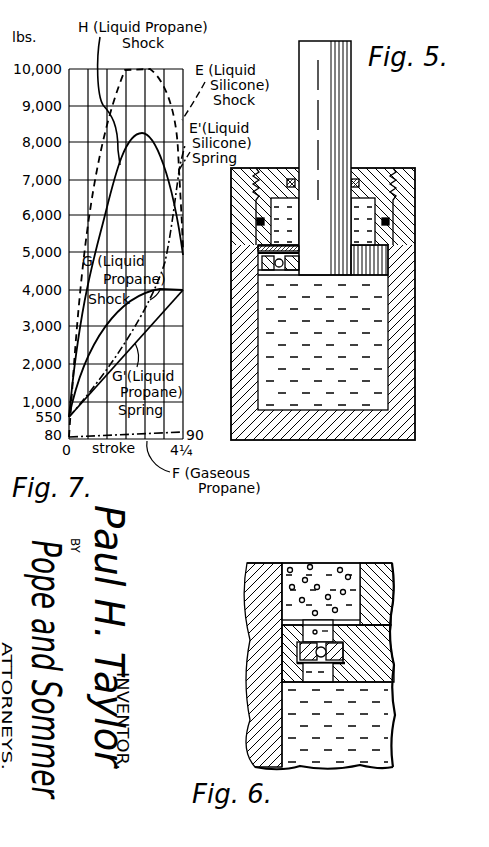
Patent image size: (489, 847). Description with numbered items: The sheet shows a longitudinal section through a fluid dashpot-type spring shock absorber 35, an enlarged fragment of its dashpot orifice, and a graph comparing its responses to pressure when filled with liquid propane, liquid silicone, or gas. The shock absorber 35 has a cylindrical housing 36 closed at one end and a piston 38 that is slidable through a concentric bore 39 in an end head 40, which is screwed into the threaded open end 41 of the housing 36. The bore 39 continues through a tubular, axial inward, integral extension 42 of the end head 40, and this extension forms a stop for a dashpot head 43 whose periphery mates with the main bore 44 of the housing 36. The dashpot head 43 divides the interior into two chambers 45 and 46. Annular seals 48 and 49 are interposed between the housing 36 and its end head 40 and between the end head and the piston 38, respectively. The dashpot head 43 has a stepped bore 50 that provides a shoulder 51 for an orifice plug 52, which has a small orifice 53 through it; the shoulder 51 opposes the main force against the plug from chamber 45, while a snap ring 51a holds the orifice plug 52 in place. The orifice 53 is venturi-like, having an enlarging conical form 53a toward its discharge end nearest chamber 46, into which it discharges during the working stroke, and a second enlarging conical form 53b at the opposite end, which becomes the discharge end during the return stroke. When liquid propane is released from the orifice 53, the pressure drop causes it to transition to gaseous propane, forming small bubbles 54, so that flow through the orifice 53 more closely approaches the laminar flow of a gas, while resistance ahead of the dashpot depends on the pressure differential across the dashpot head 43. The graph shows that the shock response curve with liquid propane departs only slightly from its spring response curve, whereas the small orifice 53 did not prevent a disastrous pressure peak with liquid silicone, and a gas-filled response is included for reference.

In FIG. 5, the spring dashpot shock absorber 35 is at (420, 373).
In FIG. 5, the cylindrical housing 36 is at (406, 402).
In FIG. 6, the cylindrical housing 36 is at (255, 570).
In FIG. 5, the piston 38 is at (338, 107).
In FIG. 6, the piston 38 is at (381, 568).
In FIG. 5, the concentric bore 39 is at (352, 168).
In FIG. 5, the end head 40 is at (270, 167).
In FIG. 5, the threaded open end 41 is at (391, 178).
In FIG. 5, the tubular axial inward integral extension 42 is at (386, 238).
In FIG. 5, the dashpot head 43 is at (388, 262).
In FIG. 6, the dashpot head 43 is at (292, 645).
In FIG. 5, the main bore 44 is at (388, 330).
In FIG. 6, the main bore 44 is at (280, 742).
In FIG. 5, the chamber 45 is at (368, 350).
In FIG. 6, the chamber 45 is at (372, 722).
In FIG. 5, the chamber 46 is at (285, 230).
In FIG. 6, the chamber 46 is at (327, 575).
In FIG. 5, the annular seal 48 is at (259, 221).
In FIG. 5, the annular seal 49 is at (291, 180).
In FIG. 5, the stepped bore 50 is at (278, 252).
In FIG. 6, the stepped bore 50 is at (302, 627).
In FIG. 5, the shoulder 51 is at (290, 257).
In FIG. 6, the shoulder 51 is at (340, 648).
In FIG. 5, the snap ring 51a is at (262, 268).
In FIG. 6, the snap ring 51a is at (346, 664).
In FIG. 5, the orifice plug 52 is at (273, 262).
In FIG. 6, the orifice plug 52 is at (333, 653).
In FIG. 5, the orifice 53 is at (283, 264).
In FIG. 6, the orifice 53 is at (300, 670).
In FIG. 6, the enlarging conical form 53a is at (330, 632).
In FIG. 6, the enlarging conical form 53b is at (345, 690).
In FIG. 6, the small bubbles 54 is at (315, 575).